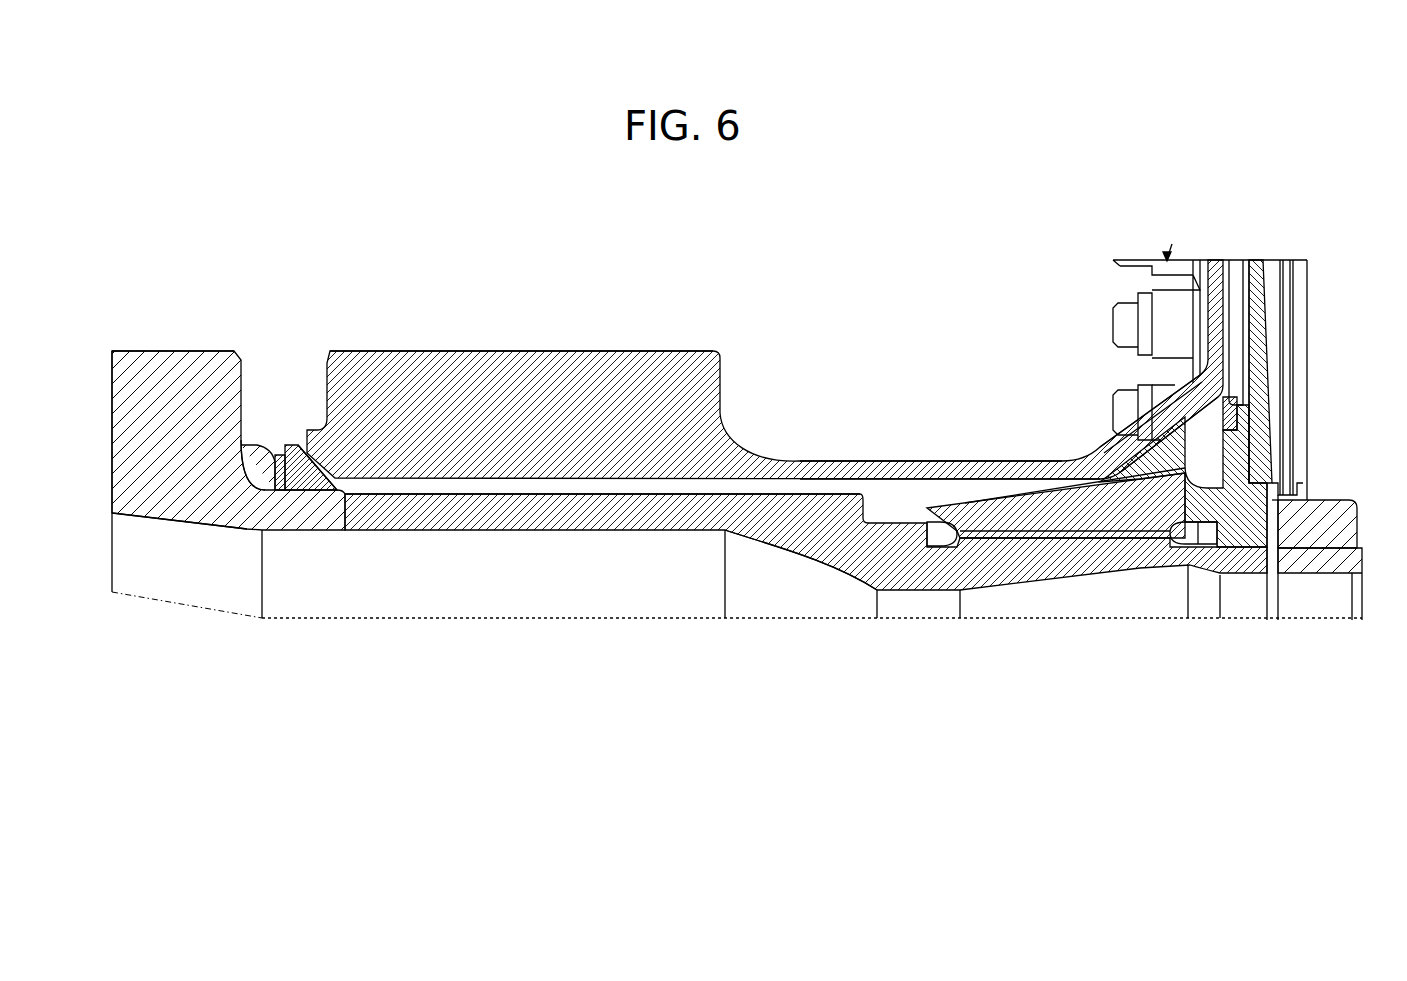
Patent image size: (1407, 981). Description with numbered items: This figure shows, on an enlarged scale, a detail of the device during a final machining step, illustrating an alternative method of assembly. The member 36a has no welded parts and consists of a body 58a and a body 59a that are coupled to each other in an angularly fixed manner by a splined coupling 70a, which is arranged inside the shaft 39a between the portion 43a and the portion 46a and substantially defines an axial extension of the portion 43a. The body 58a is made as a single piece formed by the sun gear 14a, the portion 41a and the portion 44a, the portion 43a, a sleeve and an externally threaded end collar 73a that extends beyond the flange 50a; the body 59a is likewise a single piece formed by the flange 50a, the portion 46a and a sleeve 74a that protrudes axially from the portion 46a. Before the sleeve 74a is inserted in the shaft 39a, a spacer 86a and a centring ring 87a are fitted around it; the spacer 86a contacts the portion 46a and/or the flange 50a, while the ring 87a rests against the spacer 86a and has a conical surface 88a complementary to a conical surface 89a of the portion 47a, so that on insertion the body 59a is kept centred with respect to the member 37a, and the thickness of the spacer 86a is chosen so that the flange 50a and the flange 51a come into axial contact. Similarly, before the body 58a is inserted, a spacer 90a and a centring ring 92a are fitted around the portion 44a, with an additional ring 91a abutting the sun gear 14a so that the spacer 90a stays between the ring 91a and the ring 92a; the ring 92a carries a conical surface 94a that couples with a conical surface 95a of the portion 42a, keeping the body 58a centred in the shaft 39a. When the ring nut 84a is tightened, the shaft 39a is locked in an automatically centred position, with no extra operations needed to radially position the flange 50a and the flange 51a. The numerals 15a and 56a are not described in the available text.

The sun gear 14a is at (113, 390).
The member 36a is at (197, 353).
The member 37a is at (348, 353).
The conical surface 94a is at (326, 458).
The second housing body 15a is at (553, 350).
The conical surface 95a is at (262, 455).
The shaft 39a is at (836, 461).
The fastener 56a is at (1193, 383).
The flange 51a is at (1222, 260).
The spacer 86a is at (1150, 303).
The portion 47a is at (1187, 377).
The flange 50a is at (1265, 340).
The centring ring 87a is at (1150, 380).
The conical surface 88a is at (1157, 427).
The body 59a is at (1287, 386).
The sleeve 74a is at (1143, 472).
The portion 46a is at (1283, 497).
The portion 42a is at (447, 482).
The portion 43a is at (568, 520).
The portion 41a is at (153, 517).
The additional ring 91a is at (247, 523).
The spacer 90a is at (265, 478).
The centring ring 92a is at (282, 478).
The portion 44a is at (310, 500).
The body 58a is at (793, 545).
The splined coupling 70a is at (1047, 540).
The conical surface 89a is at (1192, 546).
The end collar 73a is at (1272, 550).
The ring nut 84a is at (1320, 552).